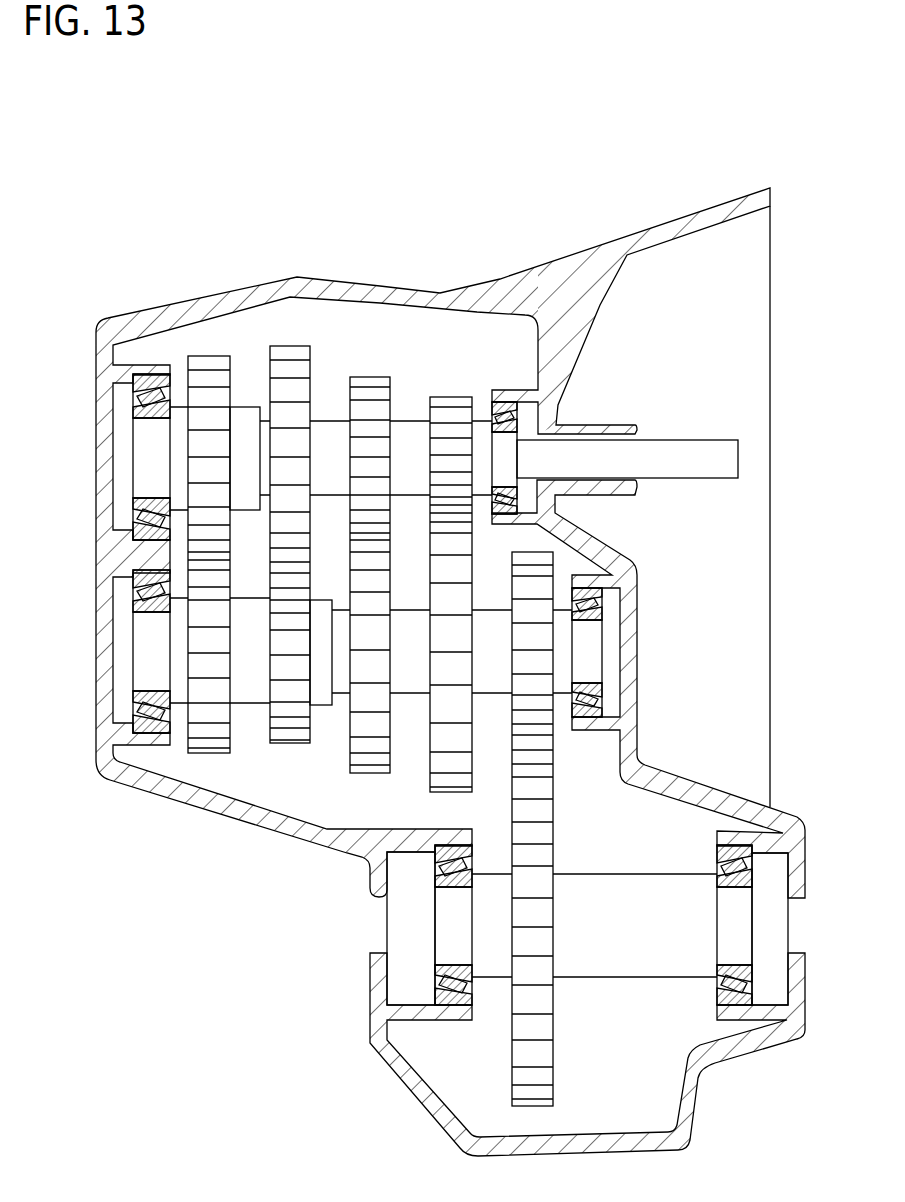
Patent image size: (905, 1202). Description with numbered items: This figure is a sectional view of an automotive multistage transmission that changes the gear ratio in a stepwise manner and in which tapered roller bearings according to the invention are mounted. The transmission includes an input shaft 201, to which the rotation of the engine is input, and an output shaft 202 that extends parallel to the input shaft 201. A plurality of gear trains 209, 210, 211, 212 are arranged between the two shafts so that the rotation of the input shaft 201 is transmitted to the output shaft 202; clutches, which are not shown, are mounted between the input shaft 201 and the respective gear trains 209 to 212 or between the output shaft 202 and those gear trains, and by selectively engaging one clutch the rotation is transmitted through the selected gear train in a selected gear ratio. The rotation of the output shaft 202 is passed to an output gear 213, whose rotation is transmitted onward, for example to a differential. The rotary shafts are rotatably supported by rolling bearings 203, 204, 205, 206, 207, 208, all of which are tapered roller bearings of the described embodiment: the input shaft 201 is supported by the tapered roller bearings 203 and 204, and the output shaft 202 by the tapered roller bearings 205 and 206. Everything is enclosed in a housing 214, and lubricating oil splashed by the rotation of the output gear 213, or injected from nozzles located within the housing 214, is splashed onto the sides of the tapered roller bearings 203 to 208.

The input shaft 201 is at (145, 459).
The output shaft 202 is at (145, 653).
The tapered roller bearing 203 is at (150, 378).
The tapered roller bearing 204 is at (504, 400).
The tapered roller bearing 205 is at (152, 743).
The tapered roller bearing 206 is at (606, 605).
The tapered roller bearing 207 is at (432, 987).
The tapered roller bearing 208 is at (754, 864).
The gear train 209 is at (452, 397).
The gear train 210 is at (366, 377).
The gear train 211 is at (290, 346).
The gear train 212 is at (209, 356).
The output gear 213 is at (540, 731).
The housing 214 is at (277, 825).